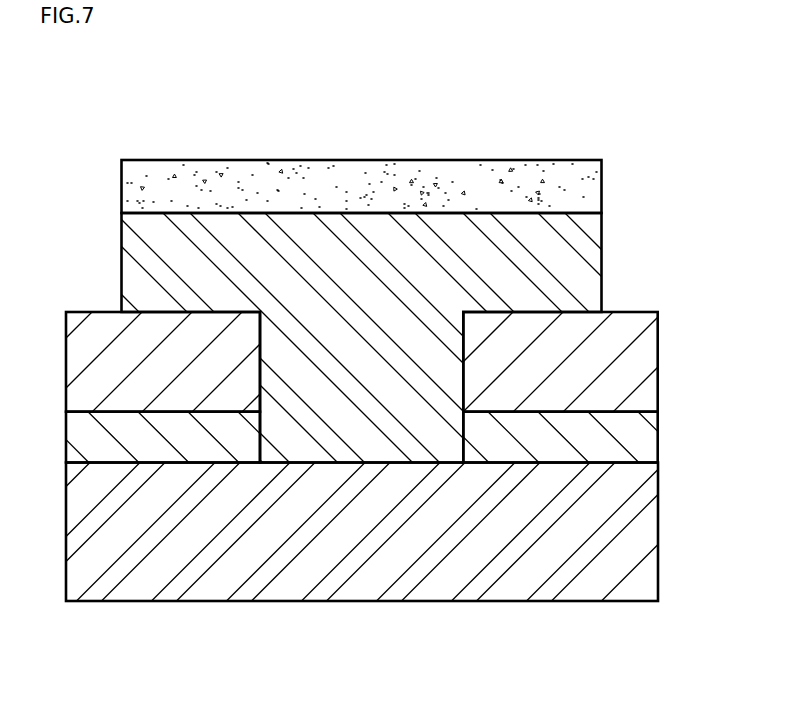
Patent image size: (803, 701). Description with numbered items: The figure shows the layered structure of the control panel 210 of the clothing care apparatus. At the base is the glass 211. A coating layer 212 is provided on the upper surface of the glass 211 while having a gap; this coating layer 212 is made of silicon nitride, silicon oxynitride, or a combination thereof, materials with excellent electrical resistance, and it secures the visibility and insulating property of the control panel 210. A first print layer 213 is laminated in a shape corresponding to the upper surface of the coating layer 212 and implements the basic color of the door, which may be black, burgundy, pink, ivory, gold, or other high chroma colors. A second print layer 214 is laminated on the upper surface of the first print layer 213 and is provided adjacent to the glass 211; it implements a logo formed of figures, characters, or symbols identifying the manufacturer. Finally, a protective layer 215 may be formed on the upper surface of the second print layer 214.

The control panel 210 is at (527, 71).
The glass 211 is at (645, 529).
The coating layer 212 is at (645, 439).
The first print layer 213 is at (645, 370).
The second print layer 214 is at (590, 268).
The protective layer 215 is at (590, 192).